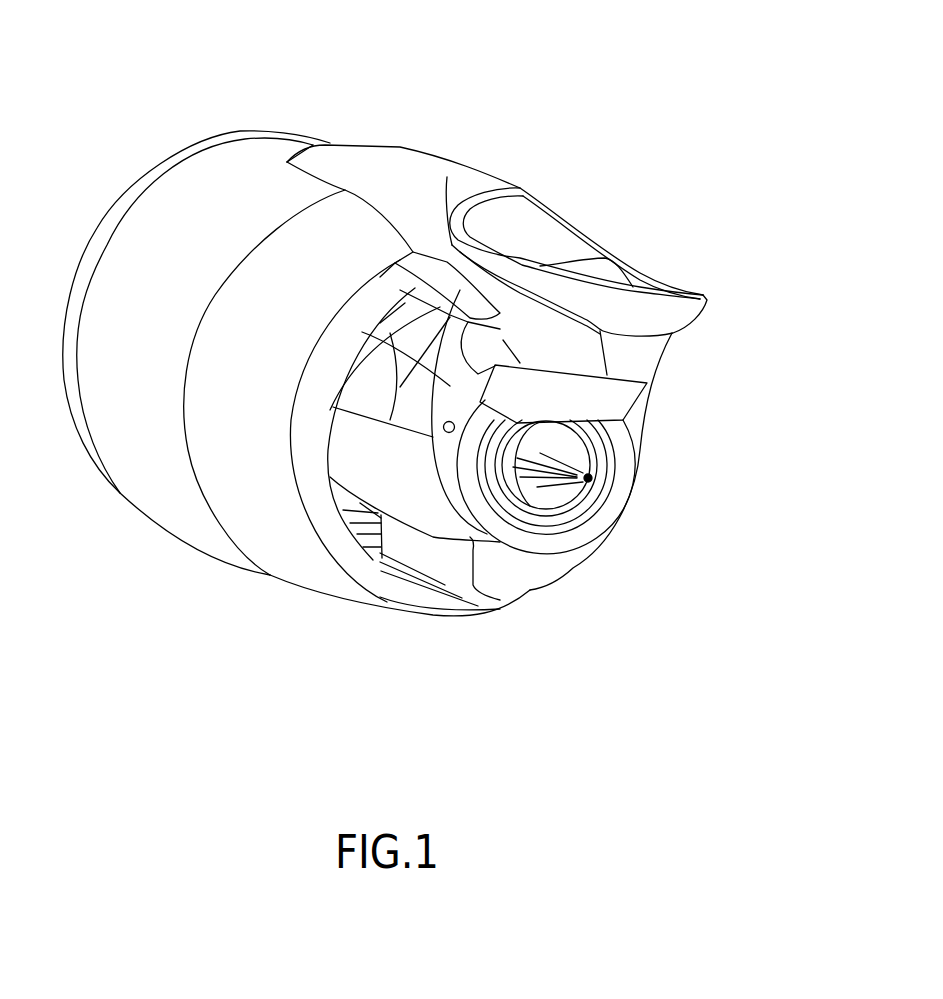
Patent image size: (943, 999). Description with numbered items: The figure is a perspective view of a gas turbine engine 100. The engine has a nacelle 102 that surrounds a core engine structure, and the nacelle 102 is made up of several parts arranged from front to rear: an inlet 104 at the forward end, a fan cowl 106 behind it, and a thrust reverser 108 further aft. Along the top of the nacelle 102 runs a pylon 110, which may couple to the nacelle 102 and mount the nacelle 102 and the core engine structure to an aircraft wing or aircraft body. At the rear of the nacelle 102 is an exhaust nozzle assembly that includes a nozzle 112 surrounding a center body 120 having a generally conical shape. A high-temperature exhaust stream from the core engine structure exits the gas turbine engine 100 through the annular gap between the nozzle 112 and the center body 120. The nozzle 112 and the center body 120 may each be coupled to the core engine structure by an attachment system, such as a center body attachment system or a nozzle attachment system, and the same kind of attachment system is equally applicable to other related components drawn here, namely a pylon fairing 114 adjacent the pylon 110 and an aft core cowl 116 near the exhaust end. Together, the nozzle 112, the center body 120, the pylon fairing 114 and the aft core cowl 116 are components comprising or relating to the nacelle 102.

The gas turbine engine 100 is at (536, 94).
The nacelle 102 is at (153, 465).
The inlet 104 is at (128, 193).
The fan cowl 106 is at (218, 170).
The thrust reverser 108 is at (307, 230).
The pylon 110 is at (400, 147).
The nozzle 112 is at (605, 448).
The pylon fairing 114 is at (620, 400).
The aft core cowl 116 is at (449, 500).
The center body 120 is at (562, 487).